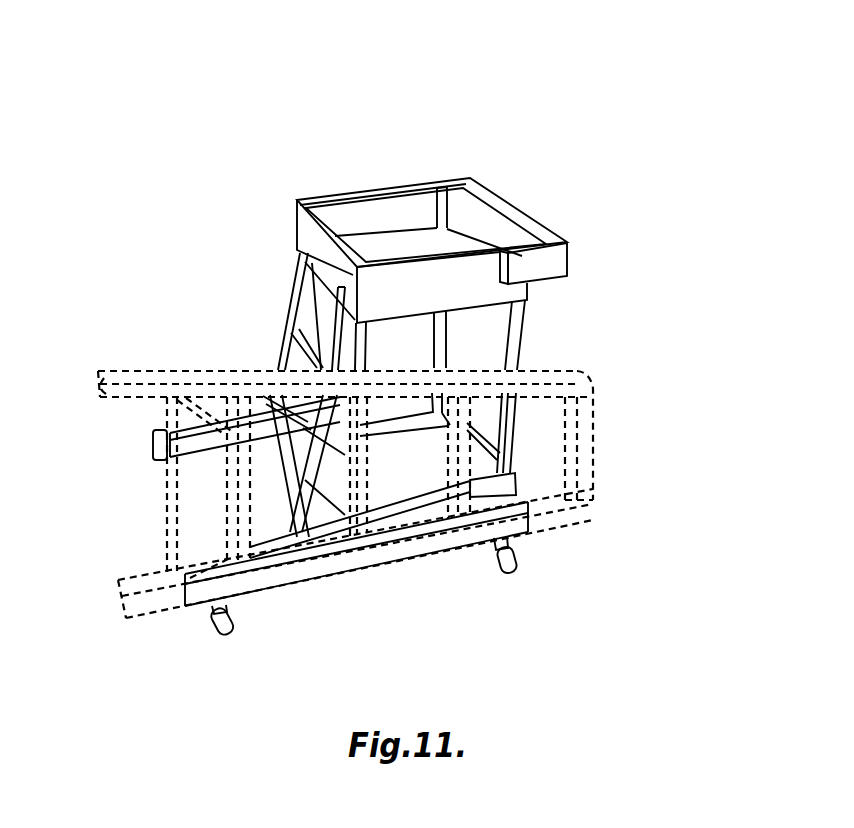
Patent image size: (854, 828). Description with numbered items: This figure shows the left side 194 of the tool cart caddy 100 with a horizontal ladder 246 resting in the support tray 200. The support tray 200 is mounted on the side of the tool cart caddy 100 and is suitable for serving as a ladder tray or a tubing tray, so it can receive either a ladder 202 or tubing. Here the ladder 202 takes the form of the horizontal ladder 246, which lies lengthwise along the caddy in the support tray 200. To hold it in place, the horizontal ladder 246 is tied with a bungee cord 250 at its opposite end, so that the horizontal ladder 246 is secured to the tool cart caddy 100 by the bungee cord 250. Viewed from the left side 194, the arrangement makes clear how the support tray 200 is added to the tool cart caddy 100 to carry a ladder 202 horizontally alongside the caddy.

The tool cart caddy 100 is at (520, 165).
The left side 194 is at (603, 299).
The bungee cord 250 is at (344, 398).
The support tray 200 is at (178, 483).
The horizontal ladder 246 is at (640, 421).
The ladder 202 is at (585, 463).